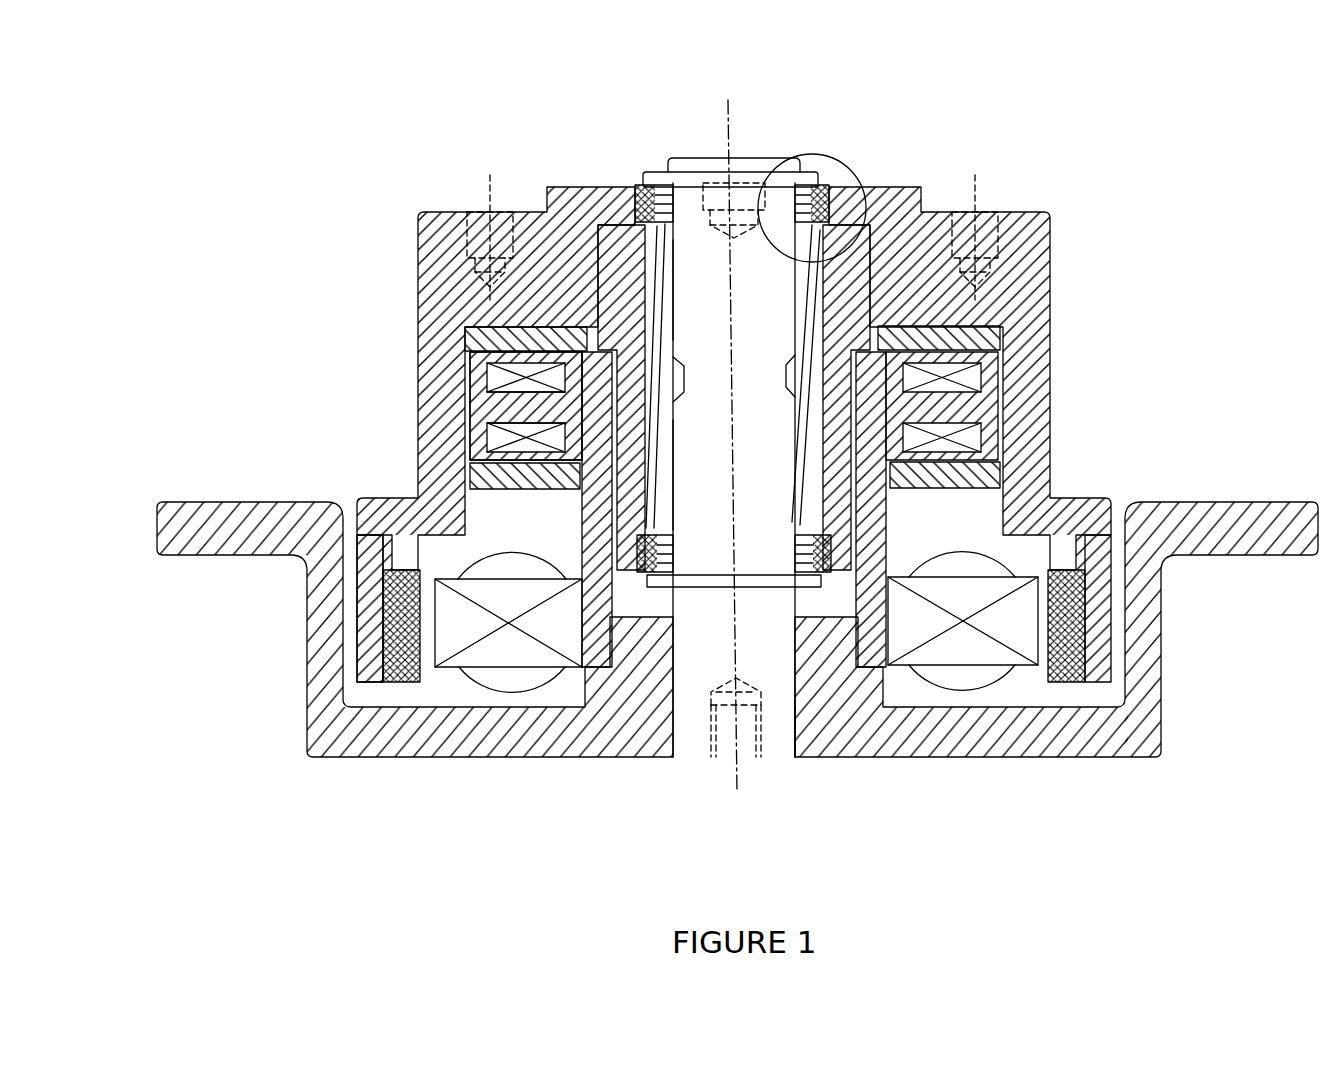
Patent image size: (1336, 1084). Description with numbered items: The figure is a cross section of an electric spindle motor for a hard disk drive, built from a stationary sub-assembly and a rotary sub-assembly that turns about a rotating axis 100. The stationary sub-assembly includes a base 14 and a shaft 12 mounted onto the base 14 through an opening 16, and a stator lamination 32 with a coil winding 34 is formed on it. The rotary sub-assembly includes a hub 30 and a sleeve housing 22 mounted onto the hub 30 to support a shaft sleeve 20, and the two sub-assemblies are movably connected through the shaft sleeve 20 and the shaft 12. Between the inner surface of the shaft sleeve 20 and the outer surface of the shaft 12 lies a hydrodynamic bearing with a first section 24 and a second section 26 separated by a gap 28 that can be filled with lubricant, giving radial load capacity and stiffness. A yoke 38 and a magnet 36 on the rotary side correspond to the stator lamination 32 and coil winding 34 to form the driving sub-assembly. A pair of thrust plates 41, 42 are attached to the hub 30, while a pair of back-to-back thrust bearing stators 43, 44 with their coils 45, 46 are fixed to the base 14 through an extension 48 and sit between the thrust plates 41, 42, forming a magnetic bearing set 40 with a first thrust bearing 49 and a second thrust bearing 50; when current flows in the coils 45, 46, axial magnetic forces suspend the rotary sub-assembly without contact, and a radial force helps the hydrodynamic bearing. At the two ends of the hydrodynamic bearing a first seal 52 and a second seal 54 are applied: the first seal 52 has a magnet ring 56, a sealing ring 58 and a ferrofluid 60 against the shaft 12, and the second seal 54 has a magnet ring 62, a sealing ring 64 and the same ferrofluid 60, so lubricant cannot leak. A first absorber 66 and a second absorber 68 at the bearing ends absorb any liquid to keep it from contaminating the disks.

The shaft 12 is at (692, 733).
The base 14 is at (1018, 740).
The opening 16 is at (800, 757).
The shaft sleeve 20 is at (813, 487).
The sleeve housing 22 is at (842, 430).
The first section 24 is at (670, 295).
The second section 26 is at (673, 457).
The gap 28 is at (673, 382).
The hub 30 is at (1043, 210).
The stator lamination 32 is at (448, 608).
The coil winding 34 is at (483, 571).
The magnet 36 is at (398, 647).
The yoke 38 is at (362, 680).
The magnetic bearing set 40 is at (483, 410).
The thrust plate 41 is at (980, 335).
The thrust plate 42 is at (990, 478).
The thrust bearing stator 43 is at (510, 375).
The thrust bearing stator 44 is at (500, 424).
The coil 45 is at (518, 355).
The coil 46 is at (502, 437).
The extension 48 is at (877, 538).
The first thrust bearing 49 is at (392, 288).
The second thrust bearing 50 is at (517, 458).
The first seal 52 is at (640, 151).
The second seal 54 is at (583, 668).
The magnet ring 56 is at (843, 192).
The sealing ring 58 is at (803, 205).
The ferrofluid 60 is at (655, 196).
The magnet ring 62 is at (857, 590).
The sealing ring 64 is at (815, 585).
The first absorber 66 is at (652, 178).
The second absorber 68 is at (644, 583).
The rotating axis 100 is at (745, 777).